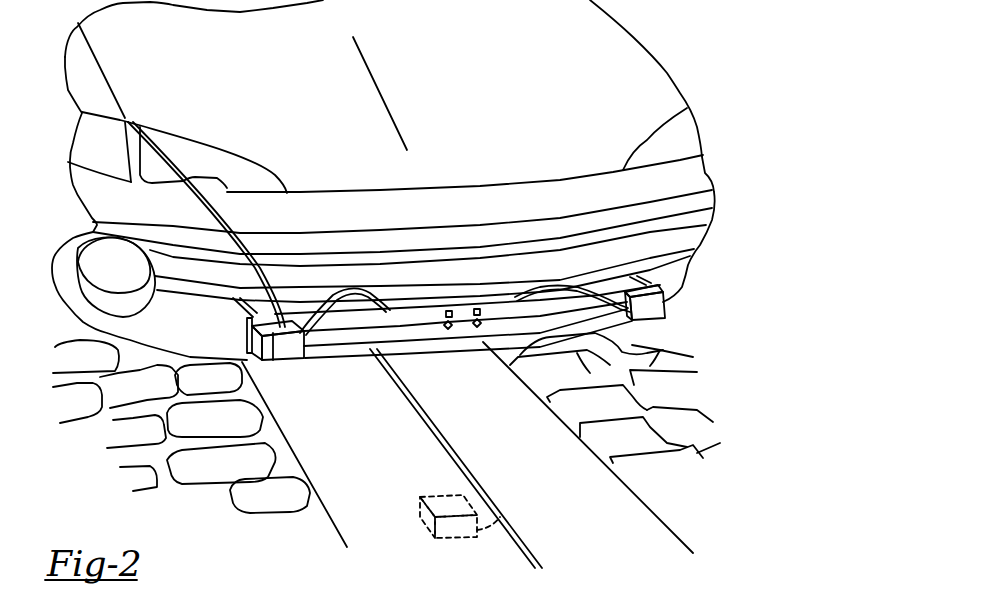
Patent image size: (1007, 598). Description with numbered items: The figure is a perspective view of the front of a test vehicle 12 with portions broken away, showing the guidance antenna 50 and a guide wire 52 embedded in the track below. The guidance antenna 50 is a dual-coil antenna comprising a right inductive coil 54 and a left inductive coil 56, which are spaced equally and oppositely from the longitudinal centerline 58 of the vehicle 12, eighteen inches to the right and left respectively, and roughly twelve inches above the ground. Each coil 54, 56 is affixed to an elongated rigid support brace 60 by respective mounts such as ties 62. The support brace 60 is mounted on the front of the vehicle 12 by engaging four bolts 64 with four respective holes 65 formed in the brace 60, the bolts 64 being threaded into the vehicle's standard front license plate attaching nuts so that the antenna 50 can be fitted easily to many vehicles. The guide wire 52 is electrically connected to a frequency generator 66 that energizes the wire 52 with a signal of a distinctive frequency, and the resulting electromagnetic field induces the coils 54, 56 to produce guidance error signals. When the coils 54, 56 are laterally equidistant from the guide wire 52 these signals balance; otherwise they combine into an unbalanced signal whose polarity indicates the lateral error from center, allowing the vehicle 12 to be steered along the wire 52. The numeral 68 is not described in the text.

The vehicle 12 is at (637, 83).
The guidance antenna 50 is at (655, 339).
The guide wire 52 is at (513, 537).
The right inductive coil 54 is at (260, 360).
The left inductive coil 56 is at (665, 310).
The longitudinal centerline 58 is at (380, 90).
The support brace 60 is at (403, 320).
The ties 62 is at (304, 358).
The bolts 64 is at (448, 329).
The holes 65 is at (477, 328).
The frequency generator 66 is at (465, 527).
The cable 68 is at (227, 188).